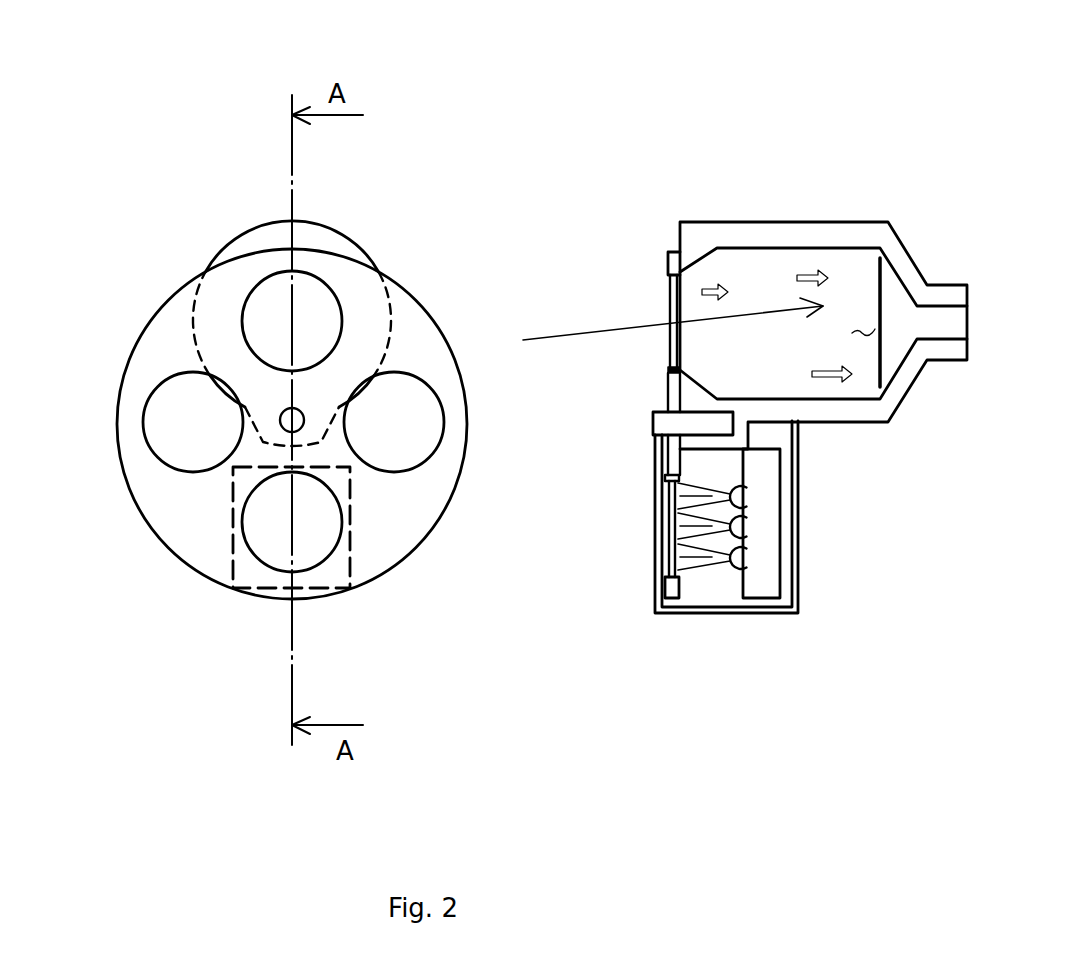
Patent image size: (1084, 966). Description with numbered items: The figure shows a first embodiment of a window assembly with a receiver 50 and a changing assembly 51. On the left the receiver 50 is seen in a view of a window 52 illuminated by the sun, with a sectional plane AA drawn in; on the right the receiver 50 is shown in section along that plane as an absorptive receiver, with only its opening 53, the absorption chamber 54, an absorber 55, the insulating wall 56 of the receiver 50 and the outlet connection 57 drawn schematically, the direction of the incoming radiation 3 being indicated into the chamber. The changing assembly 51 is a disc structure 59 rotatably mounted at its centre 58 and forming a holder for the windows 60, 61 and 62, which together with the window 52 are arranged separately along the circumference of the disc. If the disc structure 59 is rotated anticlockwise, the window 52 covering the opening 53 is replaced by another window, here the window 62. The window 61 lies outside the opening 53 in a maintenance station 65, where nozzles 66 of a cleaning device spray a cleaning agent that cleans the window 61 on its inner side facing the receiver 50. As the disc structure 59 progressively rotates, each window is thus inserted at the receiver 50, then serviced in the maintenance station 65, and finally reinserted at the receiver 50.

The flow direction 3 is at (567, 335).
The receiver 50 is at (236, 216).
The changing assembly 51 is at (473, 773).
The window 52 is at (670, 305).
The opening 53 is at (677, 370).
The absorption chamber 54 is at (753, 293).
The absorber 55 is at (880, 347).
The insulating wall 56 is at (338, 232).
The outlet connection 57 is at (938, 293).
The centre 58 is at (302, 428).
The disc structure 59 is at (413, 550).
The window 60 is at (142, 428).
The window 61 is at (241, 530).
The window 62 is at (415, 468).
The maintenance station 65 is at (350, 562).
The nozzles 66 is at (746, 527).